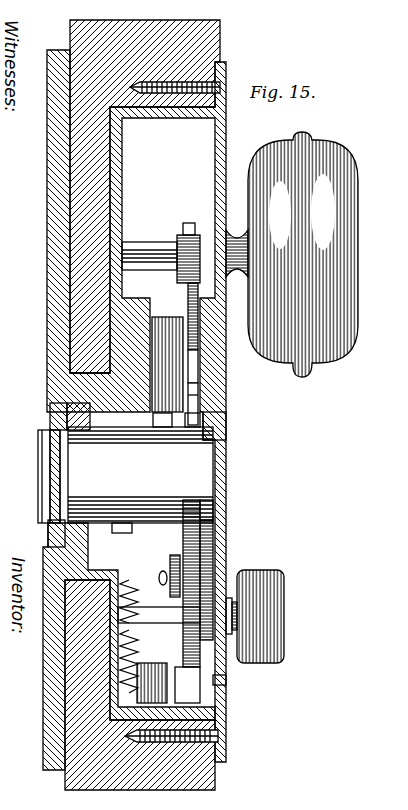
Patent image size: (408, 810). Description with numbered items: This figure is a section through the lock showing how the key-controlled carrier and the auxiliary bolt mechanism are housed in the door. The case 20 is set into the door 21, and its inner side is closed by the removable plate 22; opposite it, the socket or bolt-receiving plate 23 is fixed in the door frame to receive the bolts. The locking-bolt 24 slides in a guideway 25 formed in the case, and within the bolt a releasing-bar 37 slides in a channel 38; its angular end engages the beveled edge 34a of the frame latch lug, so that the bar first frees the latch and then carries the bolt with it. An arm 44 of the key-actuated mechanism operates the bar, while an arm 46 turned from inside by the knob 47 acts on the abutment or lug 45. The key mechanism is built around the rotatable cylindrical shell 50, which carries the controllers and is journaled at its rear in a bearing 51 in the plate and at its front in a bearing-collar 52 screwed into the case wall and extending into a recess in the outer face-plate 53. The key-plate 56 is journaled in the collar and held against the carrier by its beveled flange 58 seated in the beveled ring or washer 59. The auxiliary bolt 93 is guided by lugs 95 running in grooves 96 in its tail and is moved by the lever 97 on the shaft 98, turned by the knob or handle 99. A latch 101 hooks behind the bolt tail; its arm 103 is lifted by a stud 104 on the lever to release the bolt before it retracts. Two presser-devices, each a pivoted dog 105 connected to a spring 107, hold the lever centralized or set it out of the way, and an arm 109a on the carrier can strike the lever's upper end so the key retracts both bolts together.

The case 20 is at (108, 322).
The door 21 is at (210, 779).
The removable plate 22 is at (228, 458).
The socket or bolt-receiving plate 23 is at (395, 584).
The locking-bolt 24 is at (167, 364).
The guideway 25 is at (232, 420).
The beveled edge 34a is at (310, 253).
The releasing-bar 37 is at (196, 364).
The channel 38 is at (200, 380).
The arm 44 is at (182, 420).
The abutment or lug 45 is at (192, 312).
The arm 46 is at (184, 292).
The knob 47 is at (353, 180).
The rotatable cylindrical shell 50 is at (136, 475).
The bearing 51 is at (228, 534).
The bearing-collar 52 is at (50, 537).
The outer face-plate 53 is at (62, 376).
The rotatable key-plate 56 is at (40, 452).
The beveled flange 58 is at (55, 472).
The beveled ring or washer 59 is at (52, 410).
The auxiliary bolt 93 is at (225, 680).
The lugs 95 is at (222, 716).
The ways or grooves 96 is at (180, 672).
The lever 97 is at (208, 580).
The shaft 98 is at (148, 610).
The knob or handle 99 is at (276, 607).
The latch 101 is at (183, 515).
The arm 103 is at (228, 590).
The stud 104 is at (233, 630).
The dog 105 is at (127, 578).
The spring 107 is at (170, 667).
The arm 109a is at (230, 506).